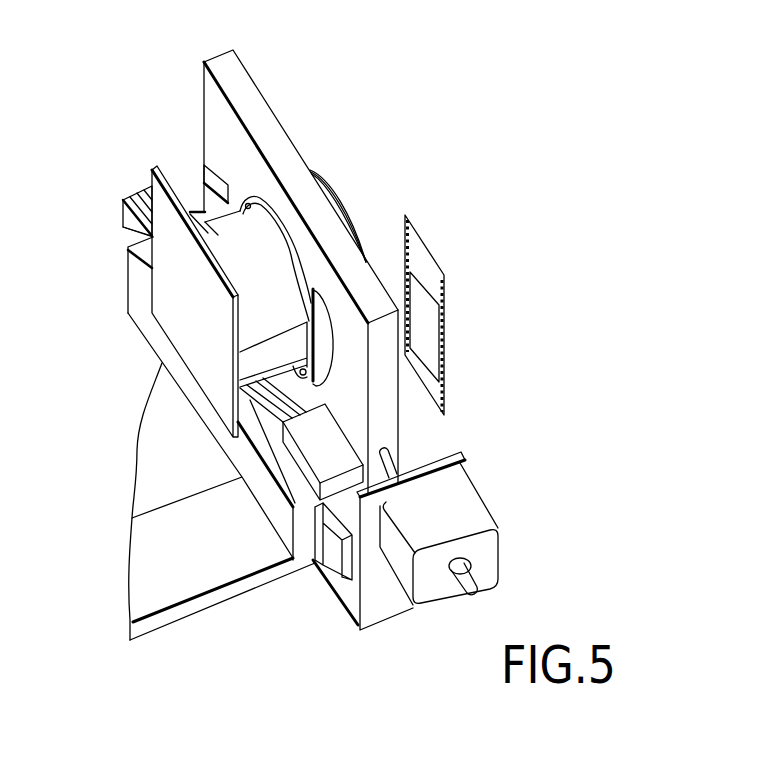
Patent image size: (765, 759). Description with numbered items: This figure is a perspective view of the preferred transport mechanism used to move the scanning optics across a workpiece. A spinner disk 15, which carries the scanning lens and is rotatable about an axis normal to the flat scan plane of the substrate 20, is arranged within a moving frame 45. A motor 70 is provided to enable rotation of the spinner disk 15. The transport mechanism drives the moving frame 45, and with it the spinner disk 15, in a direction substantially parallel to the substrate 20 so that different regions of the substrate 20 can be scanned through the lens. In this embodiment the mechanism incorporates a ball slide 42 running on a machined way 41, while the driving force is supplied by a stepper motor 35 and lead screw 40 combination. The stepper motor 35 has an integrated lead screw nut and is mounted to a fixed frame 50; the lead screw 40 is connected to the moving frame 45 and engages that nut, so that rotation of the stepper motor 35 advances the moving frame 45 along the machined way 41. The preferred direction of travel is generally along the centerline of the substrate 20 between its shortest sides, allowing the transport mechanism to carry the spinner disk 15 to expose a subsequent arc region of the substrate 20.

The spinner disk 15 is at (343, 203).
The substrate 20 is at (448, 305).
The stepper motor 35 is at (427, 606).
The lead screw 40 is at (392, 468).
The machined way 41 is at (131, 221).
The ball slide 42 is at (332, 473).
The moving frame 45 is at (260, 107).
The fixed frame 50 is at (252, 573).
The motor 70 is at (200, 230).